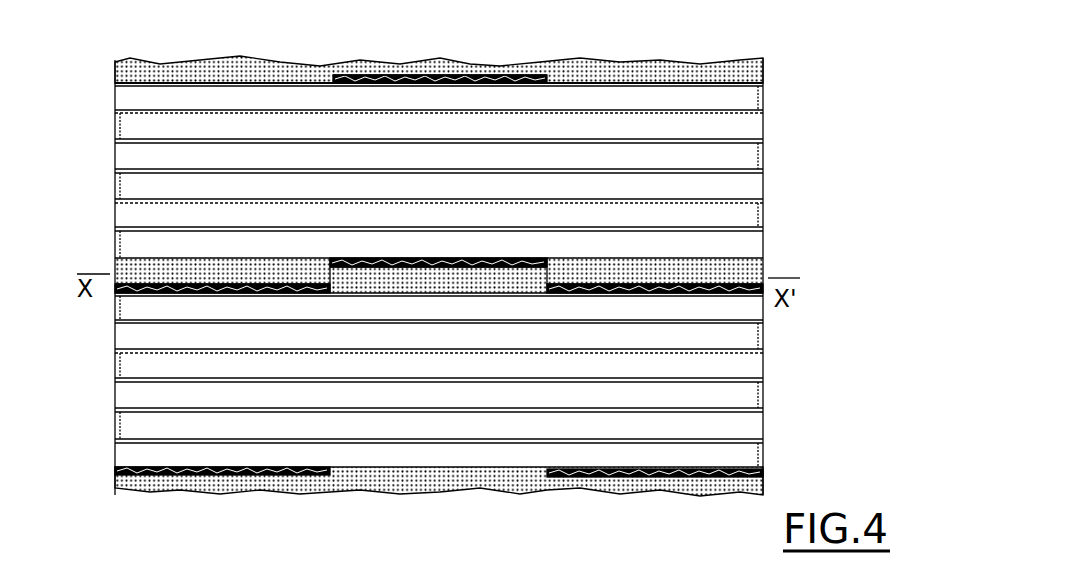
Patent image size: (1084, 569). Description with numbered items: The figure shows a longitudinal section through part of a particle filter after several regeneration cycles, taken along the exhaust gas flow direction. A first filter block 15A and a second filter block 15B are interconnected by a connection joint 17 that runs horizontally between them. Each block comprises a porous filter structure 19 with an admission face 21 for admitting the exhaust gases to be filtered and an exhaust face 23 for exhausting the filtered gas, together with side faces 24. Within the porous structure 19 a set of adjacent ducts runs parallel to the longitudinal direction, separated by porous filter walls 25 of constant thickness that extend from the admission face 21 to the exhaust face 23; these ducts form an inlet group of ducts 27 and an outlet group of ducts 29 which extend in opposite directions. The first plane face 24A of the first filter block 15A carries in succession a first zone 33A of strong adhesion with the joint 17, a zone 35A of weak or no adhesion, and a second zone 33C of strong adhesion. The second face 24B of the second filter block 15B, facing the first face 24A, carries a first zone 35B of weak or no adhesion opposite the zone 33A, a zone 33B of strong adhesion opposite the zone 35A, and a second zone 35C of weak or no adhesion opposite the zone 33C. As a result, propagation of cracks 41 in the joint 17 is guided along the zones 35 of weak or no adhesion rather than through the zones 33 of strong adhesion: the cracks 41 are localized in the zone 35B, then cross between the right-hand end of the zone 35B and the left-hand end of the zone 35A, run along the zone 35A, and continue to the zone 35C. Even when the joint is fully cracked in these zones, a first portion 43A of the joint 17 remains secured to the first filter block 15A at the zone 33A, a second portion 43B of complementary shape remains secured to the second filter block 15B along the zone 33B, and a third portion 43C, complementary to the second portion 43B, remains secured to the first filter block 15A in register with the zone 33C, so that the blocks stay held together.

The first filter block 15A is at (88, 210).
The second filter block 15B is at (82, 410).
The connection joint 17 is at (125, 265).
The porous filter structure 19 is at (370, 128).
The admission face 21 is at (115, 153).
The exhaust face 23 is at (763, 193).
The side faces 24 is at (322, 74).
The first plane face 24A is at (213, 255).
The second face 24B is at (204, 294).
The porous filter walls 25 is at (247, 112).
The inlet group of ducts 27 is at (597, 102).
The outlet group of ducts 29 is at (763, 129).
The zone of strong adhesion 33 is at (187, 66).
The first zone of strong adhesion 33A is at (292, 256).
The zone of strong adhesion 33B is at (408, 297).
The second zone of strong adhesion 33C is at (620, 257).
The zones of weak or no adhesion 35 is at (448, 70).
The zone of weak or no adhesion 35A is at (446, 257).
The first zone of weak or no adhesion 35B is at (232, 298).
The second zone of weak or no adhesion 35C is at (722, 300).
The cracks 41 is at (359, 257).
The first portion of the joint 43A is at (235, 272).
The second portion of the joint 43B is at (387, 290).
The third portion of the joint 43C is at (742, 252).